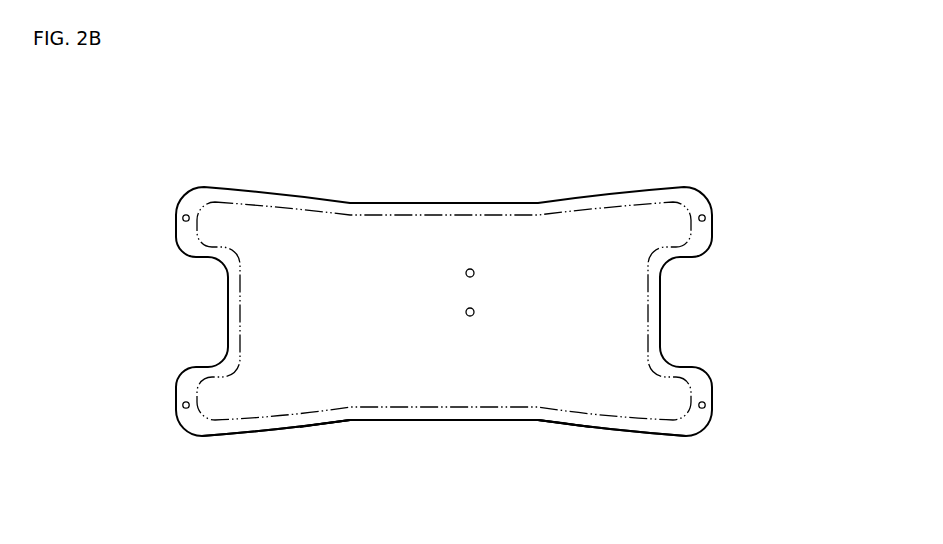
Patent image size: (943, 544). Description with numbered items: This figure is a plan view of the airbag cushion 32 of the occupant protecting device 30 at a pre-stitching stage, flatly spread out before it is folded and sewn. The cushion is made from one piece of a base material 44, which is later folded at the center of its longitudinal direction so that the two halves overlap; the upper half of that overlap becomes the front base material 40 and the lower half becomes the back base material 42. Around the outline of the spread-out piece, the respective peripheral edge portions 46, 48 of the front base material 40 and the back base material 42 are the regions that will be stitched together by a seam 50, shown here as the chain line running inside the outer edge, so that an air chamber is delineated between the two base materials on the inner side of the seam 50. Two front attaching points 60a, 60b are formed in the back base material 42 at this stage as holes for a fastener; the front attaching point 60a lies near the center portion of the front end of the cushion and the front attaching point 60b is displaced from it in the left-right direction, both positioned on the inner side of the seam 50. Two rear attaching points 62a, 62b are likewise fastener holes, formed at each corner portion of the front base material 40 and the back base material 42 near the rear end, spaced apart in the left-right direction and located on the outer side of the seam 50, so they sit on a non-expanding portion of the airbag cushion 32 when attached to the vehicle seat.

The occupant protecting device 30 is at (684, 159).
The airbag cushion 32 is at (414, 203).
The front base material 40 is at (283, 388).
The back base material 42 is at (582, 373).
The base material 44 is at (428, 380).
The peripheral edge portion 46 is at (335, 425).
The peripheral edge portion 48 is at (530, 423).
The seam 50 is at (293, 210).
The front attaching point 60a is at (467, 316).
The front attaching point 60b is at (466, 271).
The rear attaching point 62a is at (178, 218).
The rear attaching point 62b is at (178, 405).